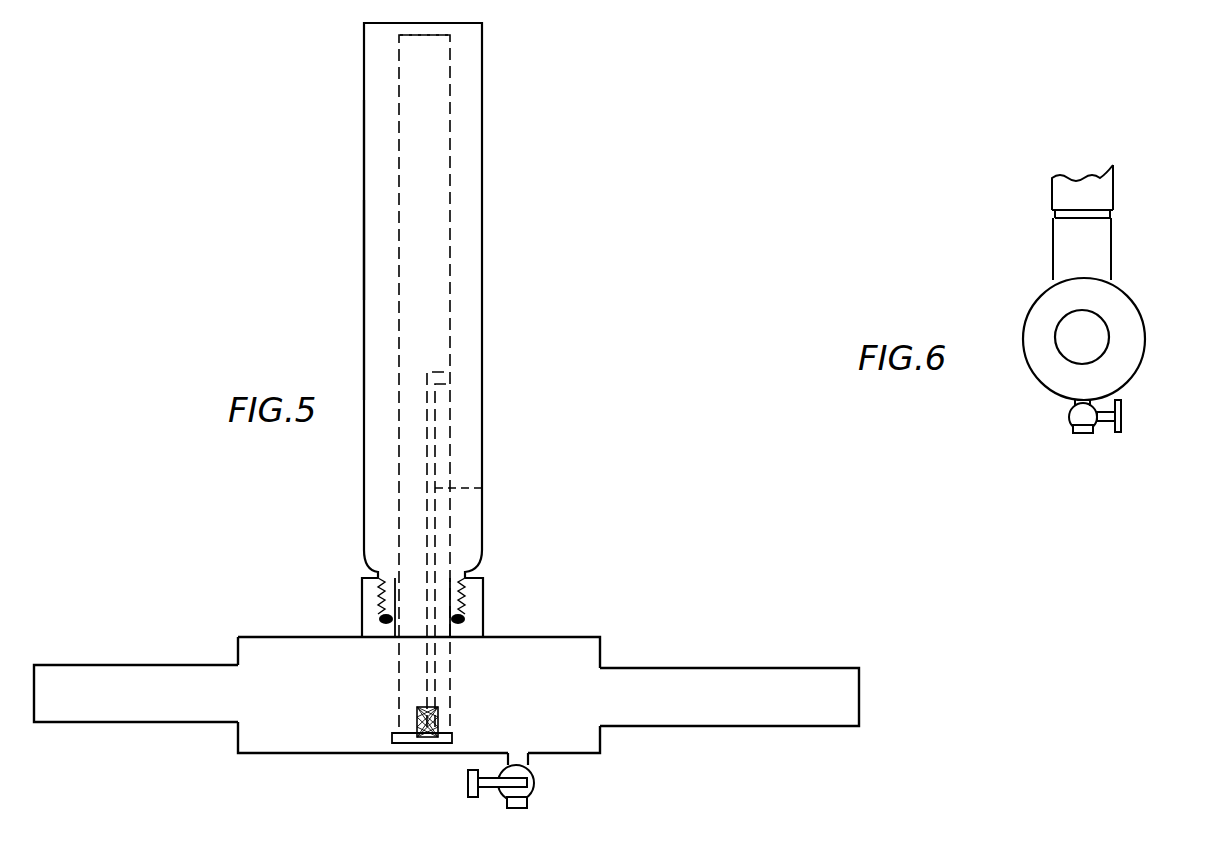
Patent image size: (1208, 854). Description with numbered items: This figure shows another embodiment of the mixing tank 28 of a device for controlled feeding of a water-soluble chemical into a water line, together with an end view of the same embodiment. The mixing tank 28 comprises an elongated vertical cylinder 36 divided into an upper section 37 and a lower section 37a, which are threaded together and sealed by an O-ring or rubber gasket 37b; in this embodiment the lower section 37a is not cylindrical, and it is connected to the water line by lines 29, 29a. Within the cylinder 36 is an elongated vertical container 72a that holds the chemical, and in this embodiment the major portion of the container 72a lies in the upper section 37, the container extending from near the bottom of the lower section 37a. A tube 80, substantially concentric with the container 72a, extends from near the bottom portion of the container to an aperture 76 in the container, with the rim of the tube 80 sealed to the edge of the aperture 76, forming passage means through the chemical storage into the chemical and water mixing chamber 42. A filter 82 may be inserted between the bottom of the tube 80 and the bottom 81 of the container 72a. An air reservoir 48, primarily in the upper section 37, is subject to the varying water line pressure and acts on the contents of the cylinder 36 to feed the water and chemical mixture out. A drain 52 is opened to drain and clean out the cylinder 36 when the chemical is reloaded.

In FIG. 5, the mixing tank 28 is at (500, 315).
In FIG. 5, the elongated vertical cylinder 36 is at (346, 305).
In FIG. 5, the upper section 37 is at (364, 172).
In FIG. 6, the upper section 37 is at (1113, 187).
In FIG. 5, the lower section 37a is at (317, 636).
In FIG. 6, the lower section 37a is at (1147, 357).
In FIG. 5, the O-ring or rubber gasket 37b is at (465, 622).
In FIG. 5, the air reservoir 48 is at (472, 98).
In FIG. 5, the container 72a is at (452, 184).
In FIG. 5, the aperture 76 is at (458, 377).
In FIG. 5, the chemical and water mixing chamber 42 is at (456, 436).
In FIG. 5, the tube 80 is at (483, 488).
In FIG. 5, the bottom 81 is at (429, 745).
In FIG. 5, the filter 82 is at (413, 735).
In FIG. 5, the line 29 is at (123, 718).
In FIG. 6, the line 29 is at (1102, 358).
In FIG. 5, the line 29a is at (805, 726).
In FIG. 5, the drain 52 is at (527, 804).
In FIG. 6, the drain 52 is at (1097, 430).